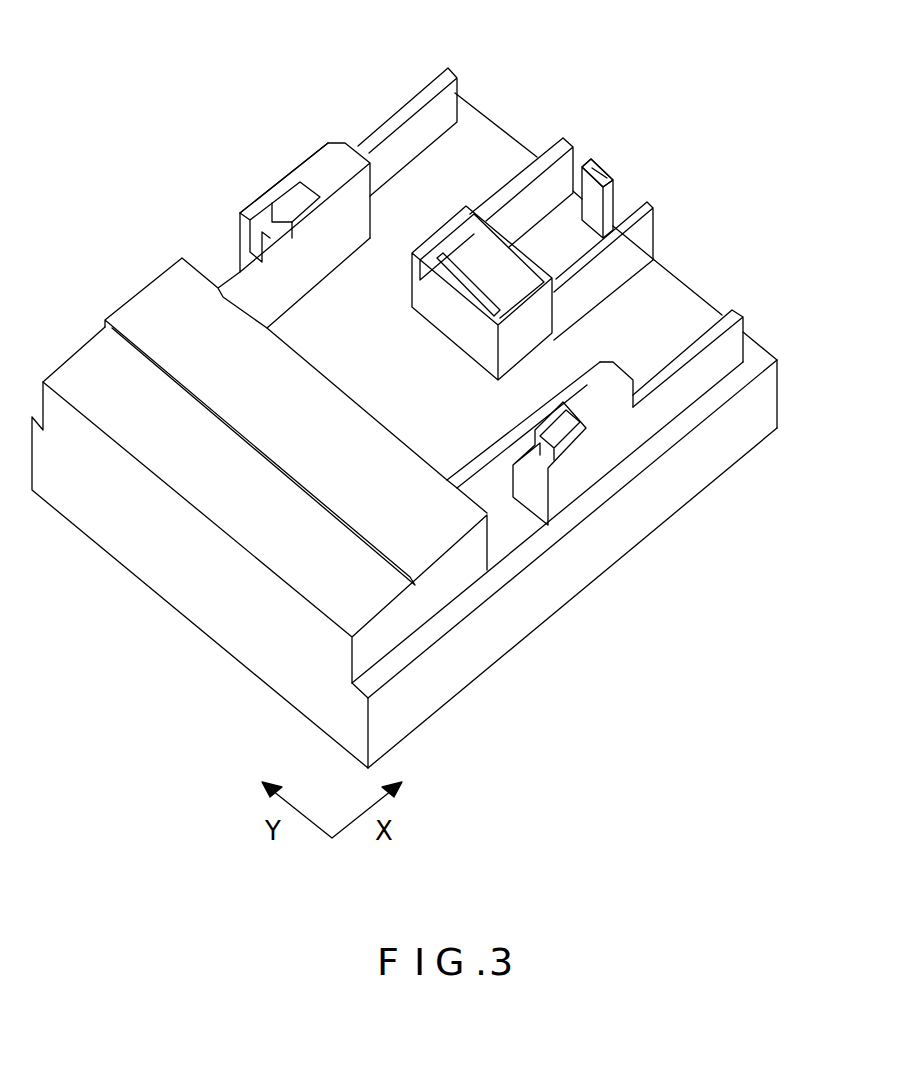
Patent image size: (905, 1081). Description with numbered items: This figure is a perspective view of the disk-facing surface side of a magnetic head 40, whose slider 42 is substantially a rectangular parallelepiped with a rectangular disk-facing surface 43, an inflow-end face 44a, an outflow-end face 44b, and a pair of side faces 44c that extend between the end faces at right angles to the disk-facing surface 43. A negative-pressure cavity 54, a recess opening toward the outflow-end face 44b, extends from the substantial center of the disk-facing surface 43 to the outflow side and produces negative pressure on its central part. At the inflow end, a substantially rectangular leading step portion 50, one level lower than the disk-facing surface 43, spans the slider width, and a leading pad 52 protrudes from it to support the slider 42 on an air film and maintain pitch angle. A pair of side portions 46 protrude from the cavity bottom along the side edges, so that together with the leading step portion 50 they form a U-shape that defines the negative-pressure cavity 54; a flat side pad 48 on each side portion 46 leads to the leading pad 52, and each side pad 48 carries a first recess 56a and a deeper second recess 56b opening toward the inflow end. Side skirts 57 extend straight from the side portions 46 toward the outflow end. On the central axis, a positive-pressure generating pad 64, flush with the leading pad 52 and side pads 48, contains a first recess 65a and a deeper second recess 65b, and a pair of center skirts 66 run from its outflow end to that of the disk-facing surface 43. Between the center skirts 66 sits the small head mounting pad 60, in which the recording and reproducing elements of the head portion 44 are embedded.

The magnetic head 40 is at (305, 107).
The slider 42 is at (444, 513).
The disk-facing surface 43 is at (387, 388).
The head portion 44 is at (598, 163).
The inflow-end face 44a is at (187, 592).
The outflow-end face 44b is at (777, 380).
The side faces 44c is at (523, 610).
The side portions 46 is at (498, 326).
The side pad 48 is at (330, 165).
The leading step portion 50 is at (92, 367).
The leading pad 52 is at (140, 323).
The negative-pressure cavity 54 is at (388, 395).
The first recess 56a is at (294, 213).
The second recess 56b is at (268, 240).
The side skirts 57 is at (392, 100).
The head mounting pad 60 is at (617, 190).
The positive-pressure generating pad 64 is at (567, 214).
The first recess 65a is at (507, 287).
The second recess 65b is at (437, 287).
The center skirts 66 is at (517, 182).